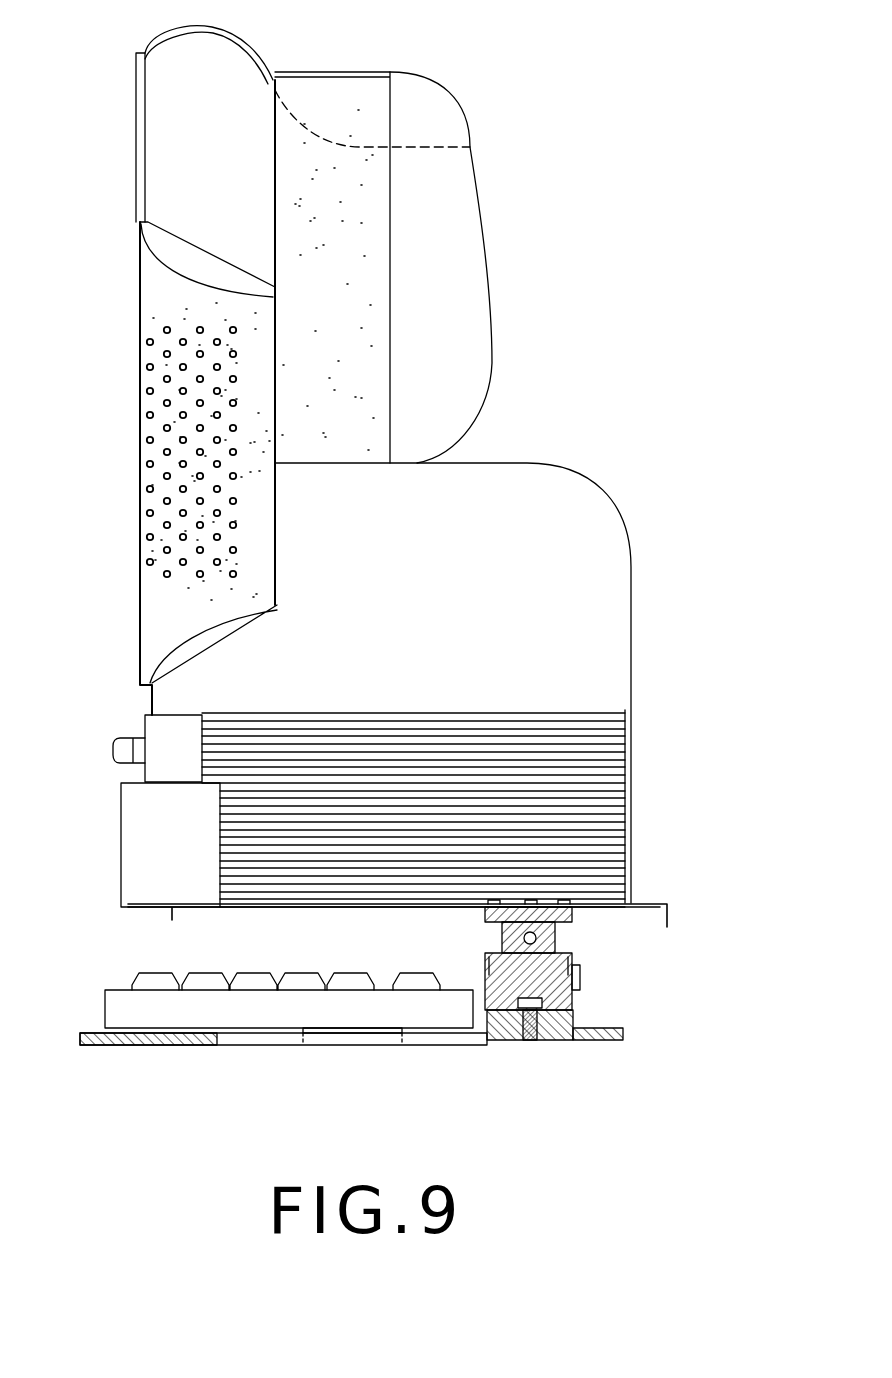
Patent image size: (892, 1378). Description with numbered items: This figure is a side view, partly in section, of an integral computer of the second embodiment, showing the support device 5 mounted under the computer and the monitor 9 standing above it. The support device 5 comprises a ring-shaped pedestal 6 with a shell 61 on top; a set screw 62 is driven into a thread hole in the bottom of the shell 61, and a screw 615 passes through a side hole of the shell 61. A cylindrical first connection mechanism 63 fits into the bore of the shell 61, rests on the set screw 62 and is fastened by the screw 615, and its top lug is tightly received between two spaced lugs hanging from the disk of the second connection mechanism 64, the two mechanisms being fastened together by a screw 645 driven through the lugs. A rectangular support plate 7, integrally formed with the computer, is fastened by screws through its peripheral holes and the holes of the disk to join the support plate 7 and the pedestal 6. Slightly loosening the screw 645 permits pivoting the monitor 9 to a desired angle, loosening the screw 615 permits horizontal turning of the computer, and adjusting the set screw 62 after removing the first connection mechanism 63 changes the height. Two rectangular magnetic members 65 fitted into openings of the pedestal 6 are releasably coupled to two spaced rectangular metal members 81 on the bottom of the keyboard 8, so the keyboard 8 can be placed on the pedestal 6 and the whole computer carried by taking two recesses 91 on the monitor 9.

The support device 5 is at (708, 957).
The ring-shaped pedestal 6 is at (137, 1045).
The shell 61 is at (575, 1022).
The screw 615 is at (581, 980).
The set screw 62 is at (548, 1042).
The first connection mechanism 63 is at (573, 958).
The second connection mechanism 64 is at (540, 907).
The screw 645 is at (537, 939).
The rectangular magnetic member 65 is at (387, 1037).
The rectangular support plate 7 is at (203, 915).
The keyboard 8 is at (128, 1008).
The rectangular metal member 81 is at (333, 1028).
The monitor 9 is at (160, 90).
The recess 91 is at (377, 110).